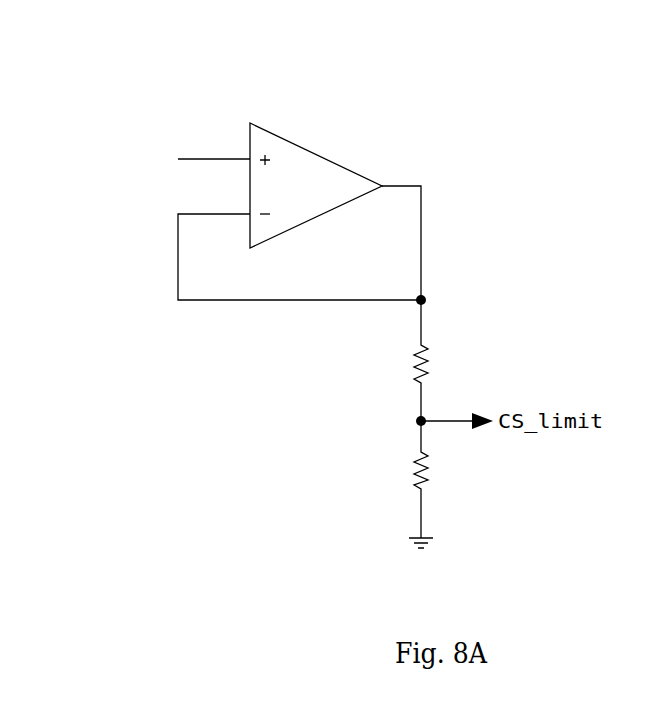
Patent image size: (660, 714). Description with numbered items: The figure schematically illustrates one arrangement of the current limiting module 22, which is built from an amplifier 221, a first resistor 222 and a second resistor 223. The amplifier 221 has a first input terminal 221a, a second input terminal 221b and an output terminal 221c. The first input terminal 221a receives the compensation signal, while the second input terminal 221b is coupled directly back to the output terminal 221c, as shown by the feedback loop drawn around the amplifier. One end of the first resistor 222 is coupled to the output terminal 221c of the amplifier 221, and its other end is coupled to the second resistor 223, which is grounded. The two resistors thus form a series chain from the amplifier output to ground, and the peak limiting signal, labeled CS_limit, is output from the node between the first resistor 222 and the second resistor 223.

The current limiting module 22 is at (300, 168).
The amplifier 221 is at (333, 157).
The first input terminal 221a is at (250, 157).
The second input terminal 221b is at (250, 212).
The output terminal 221c is at (353, 199).
The first resistor 222 is at (425, 348).
The second resistor 223 is at (428, 478).